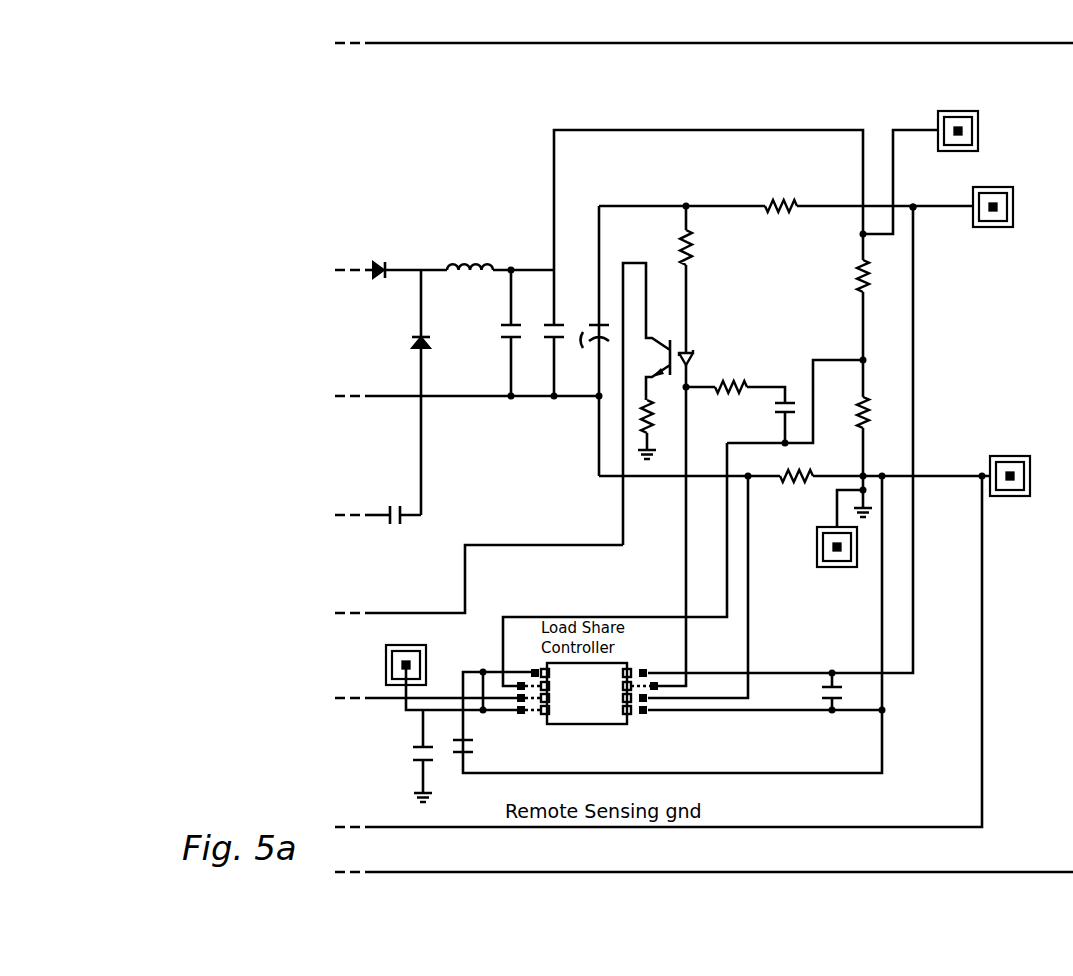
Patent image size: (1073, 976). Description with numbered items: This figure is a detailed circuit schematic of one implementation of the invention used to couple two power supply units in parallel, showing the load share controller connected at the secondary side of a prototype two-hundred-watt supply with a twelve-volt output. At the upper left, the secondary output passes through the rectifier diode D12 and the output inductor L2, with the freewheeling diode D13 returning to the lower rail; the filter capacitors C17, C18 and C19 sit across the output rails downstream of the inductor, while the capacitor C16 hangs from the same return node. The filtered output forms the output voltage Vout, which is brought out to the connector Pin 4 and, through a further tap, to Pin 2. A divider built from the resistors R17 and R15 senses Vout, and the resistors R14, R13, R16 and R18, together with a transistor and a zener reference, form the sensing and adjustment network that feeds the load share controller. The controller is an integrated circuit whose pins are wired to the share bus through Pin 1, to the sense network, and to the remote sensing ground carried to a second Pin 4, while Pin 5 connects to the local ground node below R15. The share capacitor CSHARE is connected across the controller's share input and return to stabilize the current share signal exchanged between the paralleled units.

The diode D12 is at (377, 255).
The output inductor L2 is at (470, 251).
The diode D13 is at (443, 341).
The capacitor C16 is at (393, 501).
The output capacitor C17 is at (526, 333).
The output capacitor C18 is at (569, 333).
The output capacitor C19 is at (585, 349).
The resistor R13 is at (707, 247).
The resistor R14 is at (781, 193).
The resistor R15 is at (883, 412).
The resistor R16 is at (732, 375).
The resistor R17 is at (883, 276).
The resistor R18 is at (666, 416).
The output voltage node Vout is at (931, 195).
The connector pin 1 Pin 1 is at (406, 652).
The connector pin 2 Pin 2 is at (958, 117).
The connector pin 4 Pin 4 is at (1003, 329).
The connector pin 5 Pin 5 is at (835, 563).
The current share capacitor CSHARE is at (508, 746).